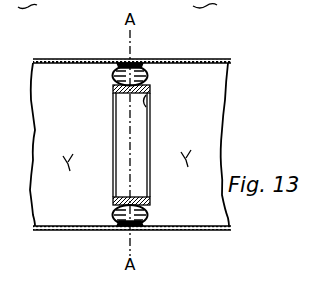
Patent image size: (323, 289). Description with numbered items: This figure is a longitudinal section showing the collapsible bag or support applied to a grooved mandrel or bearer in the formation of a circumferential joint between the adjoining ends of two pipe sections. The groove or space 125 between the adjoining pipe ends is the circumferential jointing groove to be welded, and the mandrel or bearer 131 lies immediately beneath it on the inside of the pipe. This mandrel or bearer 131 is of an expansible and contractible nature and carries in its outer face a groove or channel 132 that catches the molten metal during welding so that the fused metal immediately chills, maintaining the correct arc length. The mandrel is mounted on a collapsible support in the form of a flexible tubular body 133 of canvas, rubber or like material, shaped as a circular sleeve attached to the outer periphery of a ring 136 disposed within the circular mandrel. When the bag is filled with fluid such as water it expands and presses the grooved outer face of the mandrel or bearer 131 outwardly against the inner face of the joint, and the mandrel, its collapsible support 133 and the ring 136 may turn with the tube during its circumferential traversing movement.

The groove or space 125 is at (133, 59).
The mandrel or bearer 131 is at (115, 66).
The groove or channel 132 is at (147, 64).
The flexible tubular body 133 is at (112, 86).
The ring 136 is at (149, 125).